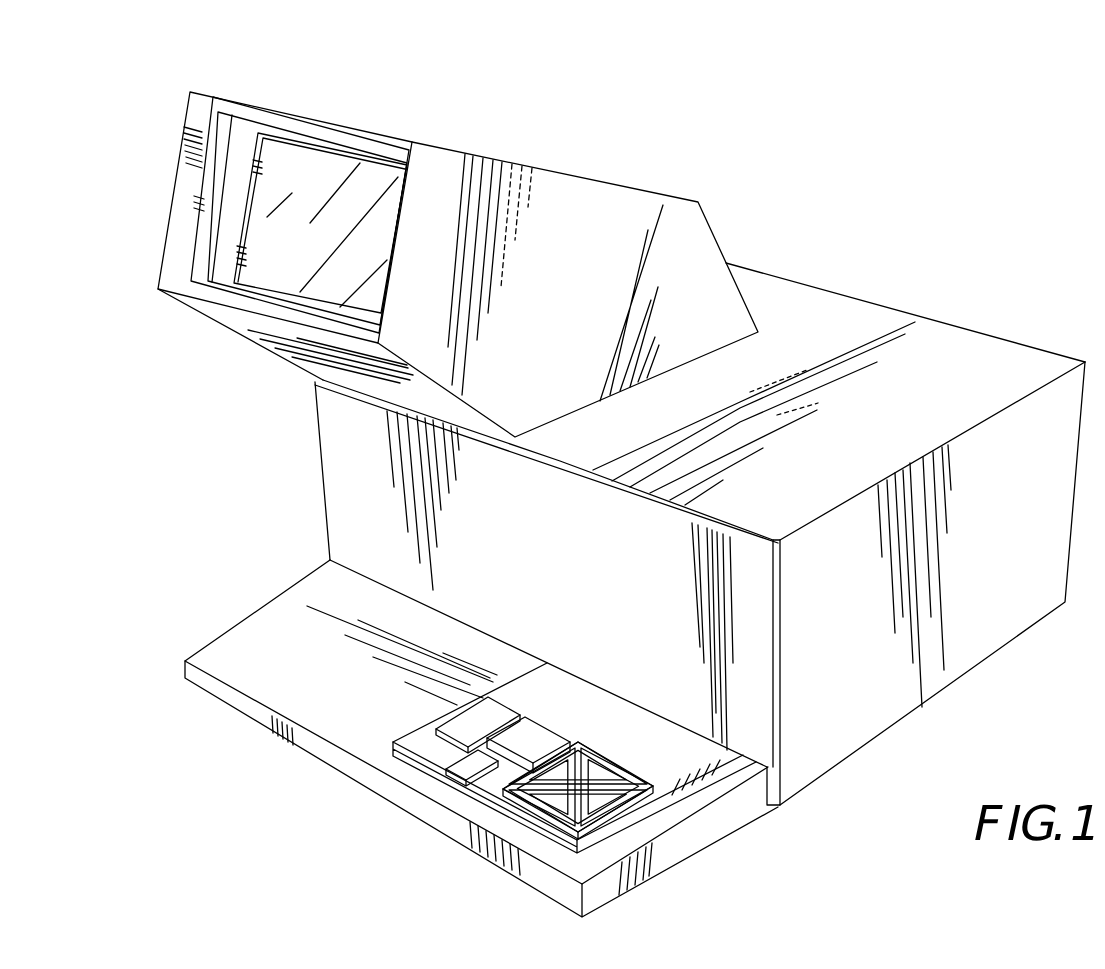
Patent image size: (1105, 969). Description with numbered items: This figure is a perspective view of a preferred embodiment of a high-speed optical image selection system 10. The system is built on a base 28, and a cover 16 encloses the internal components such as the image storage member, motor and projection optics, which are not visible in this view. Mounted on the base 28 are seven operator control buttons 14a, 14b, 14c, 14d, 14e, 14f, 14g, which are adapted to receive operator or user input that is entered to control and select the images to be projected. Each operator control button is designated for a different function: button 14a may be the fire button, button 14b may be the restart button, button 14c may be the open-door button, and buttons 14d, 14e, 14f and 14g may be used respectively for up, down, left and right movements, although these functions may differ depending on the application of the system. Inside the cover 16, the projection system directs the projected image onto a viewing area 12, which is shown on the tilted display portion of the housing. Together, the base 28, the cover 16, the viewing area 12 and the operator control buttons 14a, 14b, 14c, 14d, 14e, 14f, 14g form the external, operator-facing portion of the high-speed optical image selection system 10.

The high-speed optical image selection system 10 is at (856, 195).
The viewing area 12 is at (332, 167).
The cover 16 is at (842, 312).
The base 28 is at (250, 647).
The operator control button 14a is at (433, 733).
The operator control button 14b is at (470, 758).
The operator control button 14c is at (532, 748).
The operator control button 14d is at (552, 778).
The operator control button 14e is at (600, 801).
The operator control button 14f is at (605, 772).
The operator control button 14g is at (558, 808).